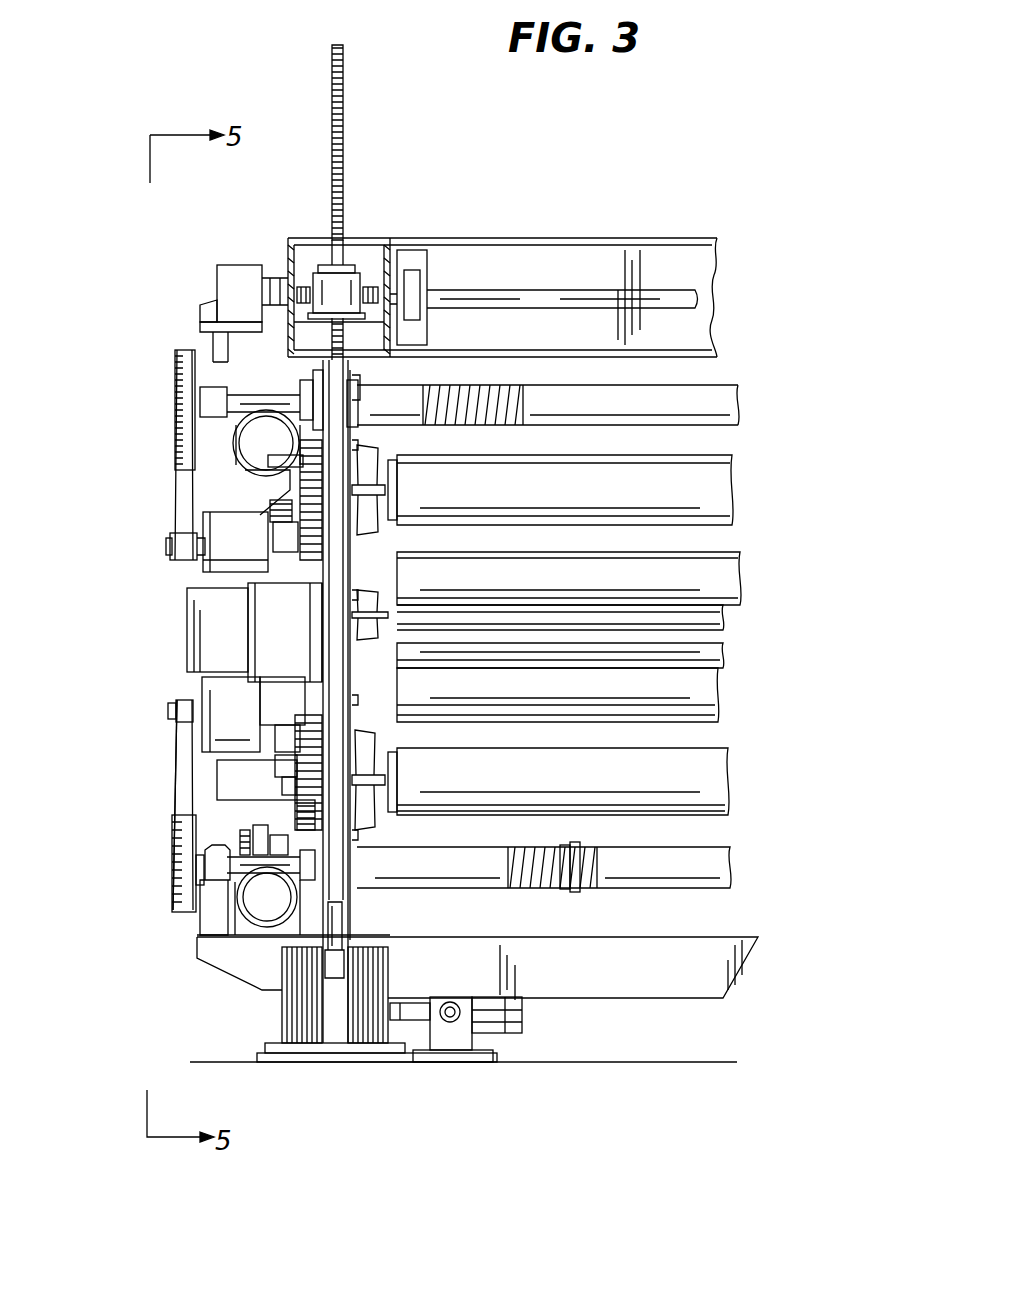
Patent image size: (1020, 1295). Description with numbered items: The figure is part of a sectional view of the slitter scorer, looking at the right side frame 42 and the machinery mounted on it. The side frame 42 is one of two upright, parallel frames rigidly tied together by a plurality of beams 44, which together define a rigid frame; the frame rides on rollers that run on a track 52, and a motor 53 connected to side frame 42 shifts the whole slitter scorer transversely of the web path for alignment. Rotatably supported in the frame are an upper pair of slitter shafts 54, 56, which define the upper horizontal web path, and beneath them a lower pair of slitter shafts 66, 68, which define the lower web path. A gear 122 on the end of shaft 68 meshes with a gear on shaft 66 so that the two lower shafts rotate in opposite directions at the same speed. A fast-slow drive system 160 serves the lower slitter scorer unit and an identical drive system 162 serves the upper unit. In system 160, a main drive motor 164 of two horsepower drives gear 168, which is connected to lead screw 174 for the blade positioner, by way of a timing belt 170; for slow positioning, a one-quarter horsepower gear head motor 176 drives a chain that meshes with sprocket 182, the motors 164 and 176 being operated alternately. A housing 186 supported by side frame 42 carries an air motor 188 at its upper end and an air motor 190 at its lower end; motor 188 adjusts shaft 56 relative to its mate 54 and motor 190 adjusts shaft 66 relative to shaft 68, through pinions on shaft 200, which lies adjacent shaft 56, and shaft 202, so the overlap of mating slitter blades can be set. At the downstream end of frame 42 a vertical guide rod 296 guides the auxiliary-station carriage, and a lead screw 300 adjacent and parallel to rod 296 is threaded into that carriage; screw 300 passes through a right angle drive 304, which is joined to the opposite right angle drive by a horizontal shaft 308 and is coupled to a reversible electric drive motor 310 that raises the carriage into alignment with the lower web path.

The right side frame 42 is at (334, 617).
The beam 44 is at (712, 283).
The track 52 is at (268, 1045).
The motor 53 is at (520, 1022).
The upper slitter shaft 54 is at (735, 475).
The upper slitter shaft 56 is at (740, 572).
The lower slitter shaft 66 is at (720, 700).
The lower slitter shaft 68 is at (730, 778).
The gear 122 is at (300, 814).
The fast-slow drive system 160 is at (168, 810).
The fast-slow drive system 162 is at (168, 466).
The main drive motor 164 is at (228, 690).
The gear 168 is at (175, 884).
The timing belt 170 is at (180, 765).
The lead screw 174 is at (572, 890).
The motor 176 is at (285, 911).
The sprocket 182 is at (232, 838).
The housing 186 is at (308, 660).
The air motor 188 is at (280, 516).
The air motor 190 is at (285, 766).
The shaft 200 is at (732, 628).
The shaft 202 is at (727, 660).
The guide rod 296 is at (338, 914).
The lead screw 300 is at (340, 175).
The right angle drive 304 is at (340, 285).
The shaft 308 is at (545, 296).
The reversible electric drive motor 310 is at (252, 250).